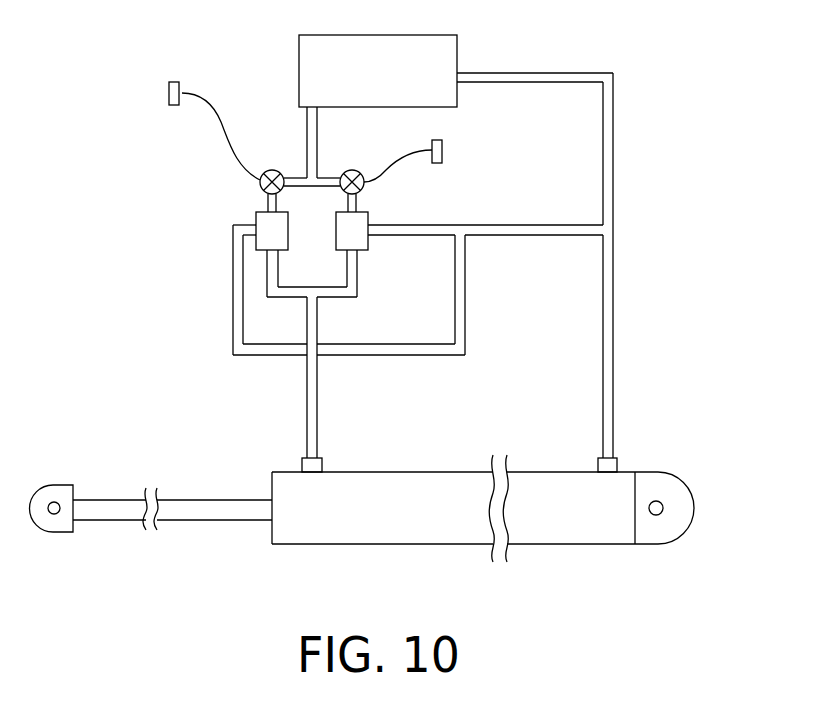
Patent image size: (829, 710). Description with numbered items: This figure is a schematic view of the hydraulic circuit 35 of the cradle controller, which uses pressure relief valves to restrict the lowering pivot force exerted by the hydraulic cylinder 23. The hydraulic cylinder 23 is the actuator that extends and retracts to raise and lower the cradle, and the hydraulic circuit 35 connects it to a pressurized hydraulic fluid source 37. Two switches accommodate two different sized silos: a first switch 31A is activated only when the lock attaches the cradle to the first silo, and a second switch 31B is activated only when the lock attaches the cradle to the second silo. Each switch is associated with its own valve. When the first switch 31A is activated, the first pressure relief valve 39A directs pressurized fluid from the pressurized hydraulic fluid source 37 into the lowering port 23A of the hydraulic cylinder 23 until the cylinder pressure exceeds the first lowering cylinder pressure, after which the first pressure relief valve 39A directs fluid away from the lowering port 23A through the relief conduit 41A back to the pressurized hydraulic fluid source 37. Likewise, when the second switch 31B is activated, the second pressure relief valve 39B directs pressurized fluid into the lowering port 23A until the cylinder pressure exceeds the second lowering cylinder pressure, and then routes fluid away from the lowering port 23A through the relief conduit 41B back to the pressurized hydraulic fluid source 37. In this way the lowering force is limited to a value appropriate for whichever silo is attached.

The hydraulic circuit 35 is at (411, 304).
The pressurized hydraulic fluid source 37 is at (457, 50).
The first switch 31A is at (179, 85).
The second switch 31B is at (442, 148).
The first pressure relief valve 39A is at (256, 218).
The second pressure relief valve 39B is at (368, 214).
The relief conduit 41A is at (233, 297).
The relief conduit 41B is at (418, 236).
The hydraulic cylinder 23 is at (382, 545).
The lowering port 23A is at (322, 458).